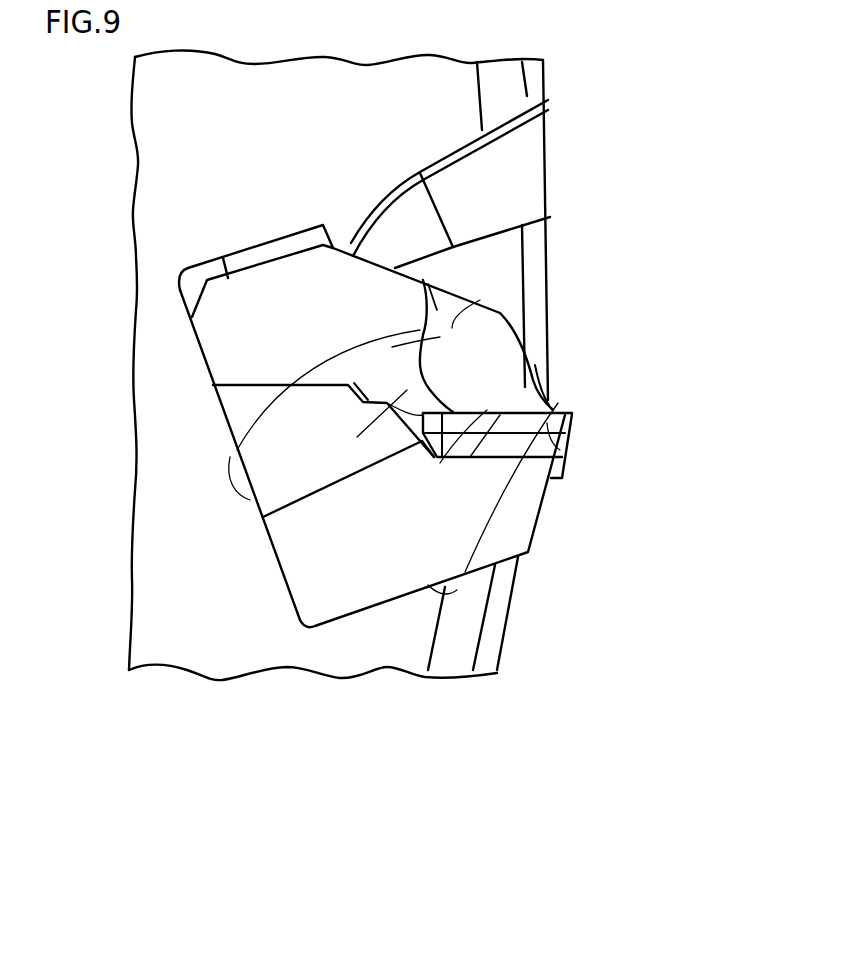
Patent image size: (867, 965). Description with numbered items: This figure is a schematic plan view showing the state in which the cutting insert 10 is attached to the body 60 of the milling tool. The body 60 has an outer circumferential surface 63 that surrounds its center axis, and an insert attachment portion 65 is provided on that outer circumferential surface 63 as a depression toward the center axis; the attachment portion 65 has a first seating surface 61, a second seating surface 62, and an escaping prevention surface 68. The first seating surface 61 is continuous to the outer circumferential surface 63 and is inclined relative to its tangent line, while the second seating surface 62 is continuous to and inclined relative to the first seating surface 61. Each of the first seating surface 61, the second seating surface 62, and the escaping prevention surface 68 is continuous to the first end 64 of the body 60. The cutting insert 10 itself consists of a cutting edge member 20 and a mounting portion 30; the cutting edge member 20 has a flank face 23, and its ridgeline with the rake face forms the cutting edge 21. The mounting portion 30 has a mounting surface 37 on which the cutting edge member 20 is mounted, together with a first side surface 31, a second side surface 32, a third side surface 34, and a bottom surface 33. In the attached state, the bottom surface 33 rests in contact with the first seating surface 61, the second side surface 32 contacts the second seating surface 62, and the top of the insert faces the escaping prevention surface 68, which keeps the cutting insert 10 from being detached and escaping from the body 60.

The cutting insert 10 is at (663, 282).
The cutting edge member 20 is at (627, 415).
The cutting edge 21 is at (560, 423).
The flank face 23 is at (550, 438).
The mounting portion 30 is at (627, 280).
The first side surface 31 is at (440, 337).
The second side surface 32 is at (480, 300).
The bottom surface 33 is at (480, 412).
The third side surface 34 is at (407, 390).
The mounting surface 37 is at (487, 410).
The body 60 is at (150, 762).
The first seating surface 61 is at (403, 590).
The second seating surface 62 is at (263, 527).
The outer circumferential surface 63 is at (507, 633).
The first end 64 is at (180, 610).
The insert attachment portion 65 is at (400, 728).
The escaping prevention surface 68 is at (357, 255).